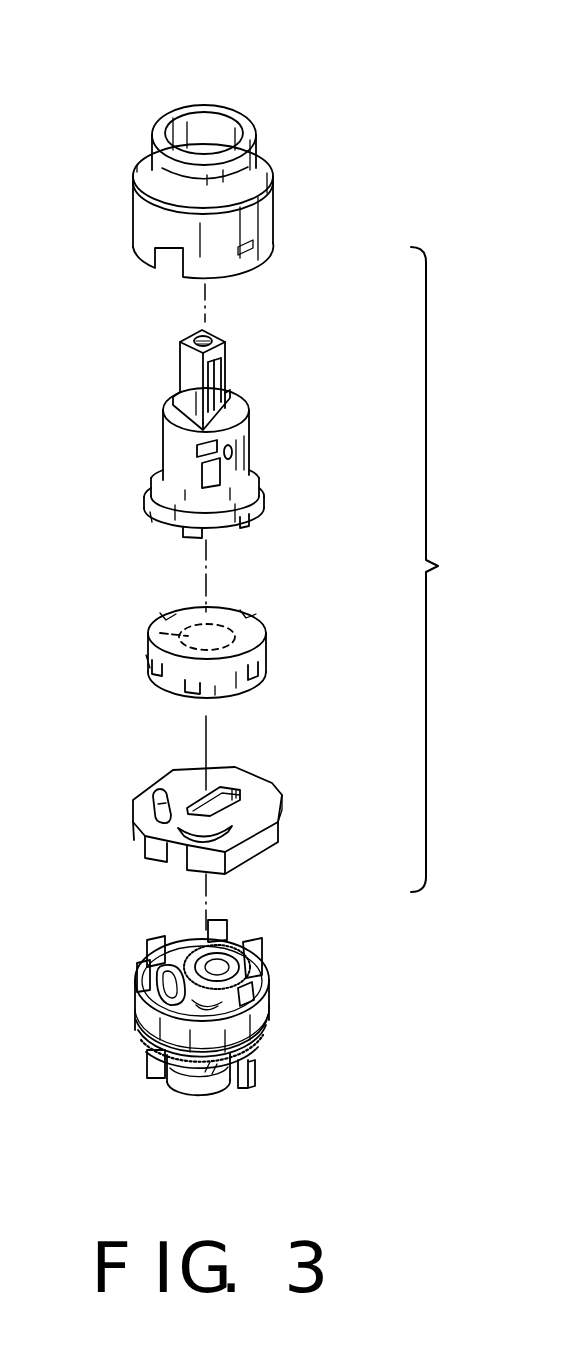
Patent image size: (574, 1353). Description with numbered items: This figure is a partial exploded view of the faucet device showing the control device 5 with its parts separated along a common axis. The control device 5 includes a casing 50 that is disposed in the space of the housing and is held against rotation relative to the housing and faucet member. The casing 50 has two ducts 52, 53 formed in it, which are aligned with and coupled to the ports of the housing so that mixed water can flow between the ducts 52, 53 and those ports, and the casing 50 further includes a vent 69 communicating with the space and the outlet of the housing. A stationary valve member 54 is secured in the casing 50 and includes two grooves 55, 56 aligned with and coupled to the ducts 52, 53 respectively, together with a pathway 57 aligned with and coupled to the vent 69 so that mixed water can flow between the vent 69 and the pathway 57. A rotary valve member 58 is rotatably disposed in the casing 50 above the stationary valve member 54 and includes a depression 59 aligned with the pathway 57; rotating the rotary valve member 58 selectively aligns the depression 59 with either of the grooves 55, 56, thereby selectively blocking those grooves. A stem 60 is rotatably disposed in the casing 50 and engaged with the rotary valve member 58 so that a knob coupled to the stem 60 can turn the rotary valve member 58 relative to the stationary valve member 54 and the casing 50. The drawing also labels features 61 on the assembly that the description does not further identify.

The control device 5 is at (323, 110).
The casing 50 is at (148, 218).
The stem 60 is at (222, 375).
The engaging projections 61 is at (148, 657).
The depression 59 is at (223, 633).
The rotary valve member 58 is at (158, 677).
The groove 55 is at (160, 800).
The pathway 57 is at (224, 800).
The stationary valve member 54 is at (157, 847).
The groove 56 is at (232, 828).
The duct 52 is at (150, 1064).
The duct 53 is at (198, 1078).
The vent 69 is at (243, 993).